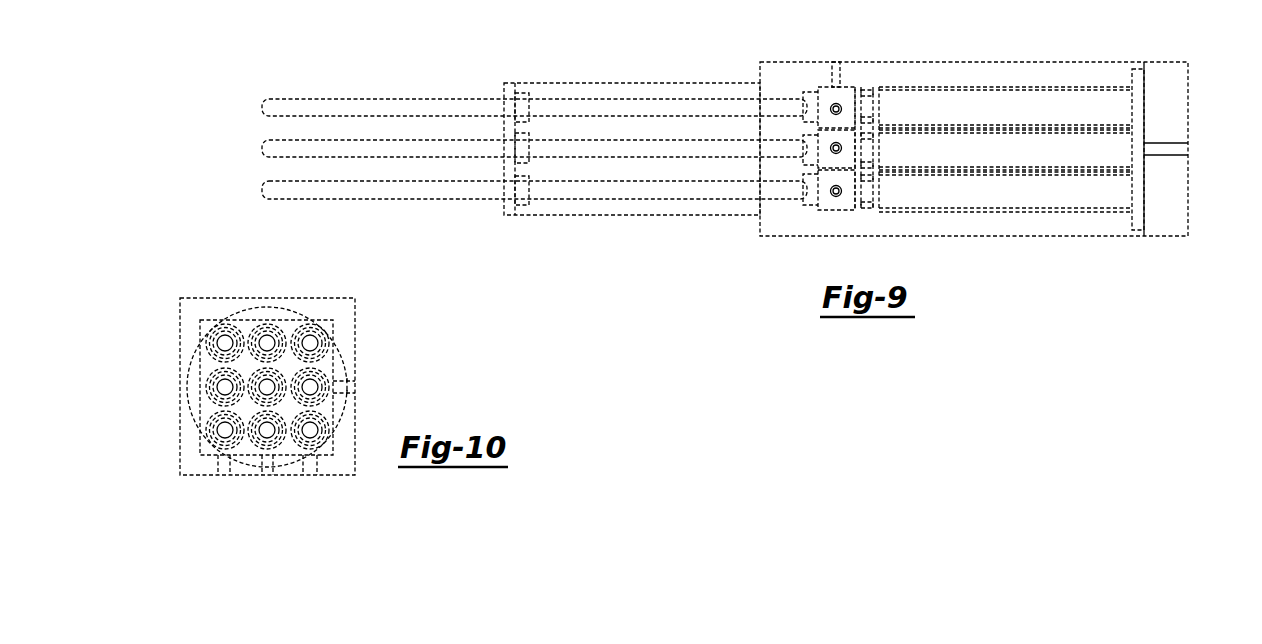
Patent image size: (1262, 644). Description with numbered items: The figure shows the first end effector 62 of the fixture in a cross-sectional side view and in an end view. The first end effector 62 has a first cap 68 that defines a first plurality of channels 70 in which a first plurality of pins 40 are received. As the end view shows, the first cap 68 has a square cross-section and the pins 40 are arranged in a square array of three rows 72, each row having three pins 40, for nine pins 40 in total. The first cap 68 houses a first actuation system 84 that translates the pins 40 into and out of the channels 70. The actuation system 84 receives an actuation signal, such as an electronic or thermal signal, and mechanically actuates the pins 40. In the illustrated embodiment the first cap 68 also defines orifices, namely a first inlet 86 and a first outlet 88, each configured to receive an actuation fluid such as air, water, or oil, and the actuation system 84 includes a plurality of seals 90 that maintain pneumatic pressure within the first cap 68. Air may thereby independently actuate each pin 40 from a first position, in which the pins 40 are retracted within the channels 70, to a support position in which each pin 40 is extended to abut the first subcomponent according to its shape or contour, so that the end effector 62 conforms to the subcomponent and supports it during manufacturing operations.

In FIG. 9, the first plurality of pins 40 is at (295, 99).
In FIG. 10, the first plurality of pins 40 is at (218, 386).
In FIG. 9, the first end effector 62 is at (963, 62).
In FIG. 9, the first cap 68 is at (560, 83).
In FIG. 10, the first cap 68 is at (180, 326).
In FIG. 9, the first plurality of channels 70 is at (553, 105).
In FIG. 10, the first plurality of channels 70 is at (222, 430).
In FIG. 10, the rows 72 is at (331, 292).
In FIG. 9, the first actuation system 84 is at (1027, 104).
In FIG. 9, the first inlet 86 is at (1193, 152).
In FIG. 9, the first outlet 88 is at (840, 59).
In FIG. 9, the seals 90 is at (516, 214).